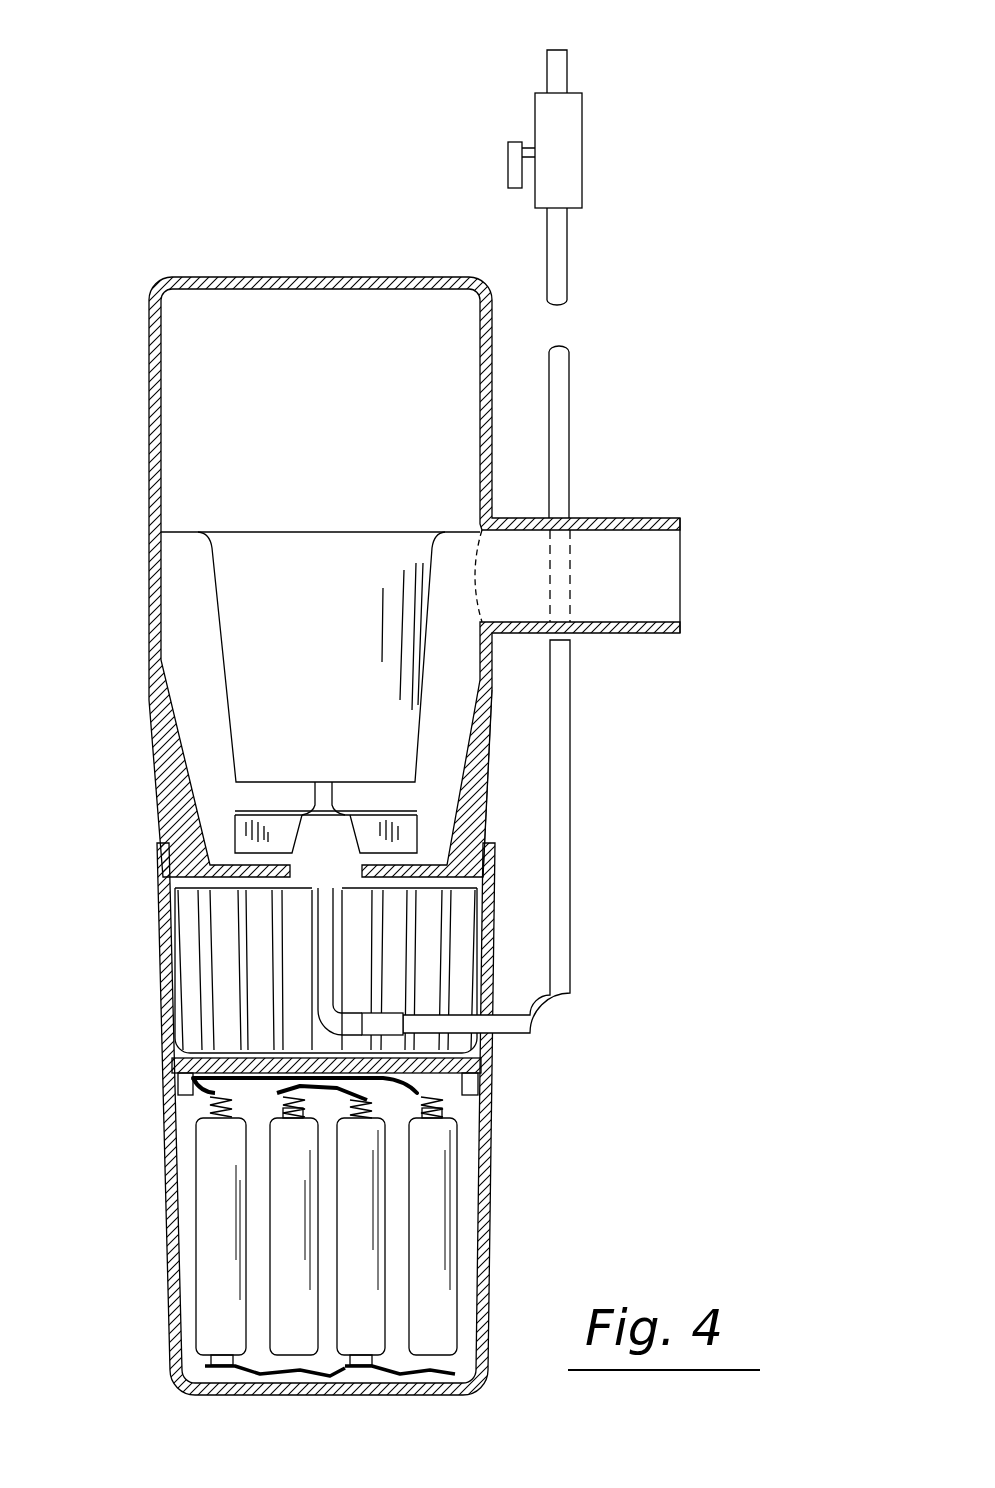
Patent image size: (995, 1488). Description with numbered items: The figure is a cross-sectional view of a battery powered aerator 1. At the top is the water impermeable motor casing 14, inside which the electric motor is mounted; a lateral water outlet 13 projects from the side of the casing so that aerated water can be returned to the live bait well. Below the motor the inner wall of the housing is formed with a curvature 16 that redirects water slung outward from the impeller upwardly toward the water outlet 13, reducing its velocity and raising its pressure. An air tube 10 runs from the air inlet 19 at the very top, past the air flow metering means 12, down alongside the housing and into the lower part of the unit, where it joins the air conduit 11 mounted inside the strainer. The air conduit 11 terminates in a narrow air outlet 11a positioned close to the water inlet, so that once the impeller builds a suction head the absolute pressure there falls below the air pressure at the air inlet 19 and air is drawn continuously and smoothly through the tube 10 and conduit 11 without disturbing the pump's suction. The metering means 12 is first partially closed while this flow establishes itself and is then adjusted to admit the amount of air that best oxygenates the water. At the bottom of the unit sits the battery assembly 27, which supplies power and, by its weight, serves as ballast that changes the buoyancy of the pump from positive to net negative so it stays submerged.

The aerator 1 is at (170, 498).
The air tube 10 is at (566, 893).
The air conduit 11 is at (320, 940).
The air outlet 11a is at (325, 888).
The air flow metering means 12 is at (582, 165).
The water outlet 13 is at (683, 540).
The motor casing 14 is at (149, 355).
The curvature in the inner wall of the impeller housing 16 is at (458, 790).
The air inlet 19 is at (558, 50).
The battery assembly 27 is at (487, 1225).